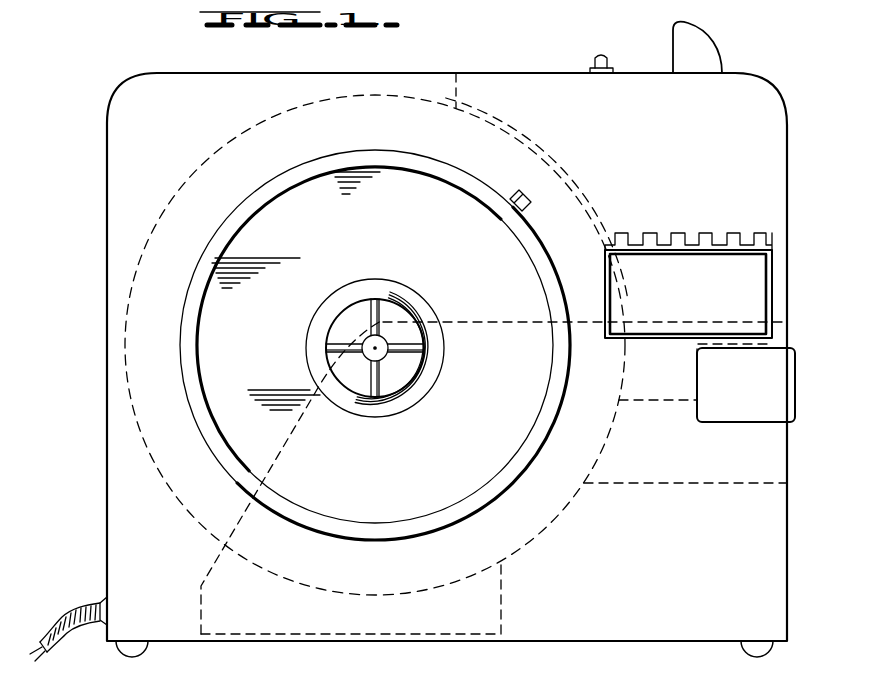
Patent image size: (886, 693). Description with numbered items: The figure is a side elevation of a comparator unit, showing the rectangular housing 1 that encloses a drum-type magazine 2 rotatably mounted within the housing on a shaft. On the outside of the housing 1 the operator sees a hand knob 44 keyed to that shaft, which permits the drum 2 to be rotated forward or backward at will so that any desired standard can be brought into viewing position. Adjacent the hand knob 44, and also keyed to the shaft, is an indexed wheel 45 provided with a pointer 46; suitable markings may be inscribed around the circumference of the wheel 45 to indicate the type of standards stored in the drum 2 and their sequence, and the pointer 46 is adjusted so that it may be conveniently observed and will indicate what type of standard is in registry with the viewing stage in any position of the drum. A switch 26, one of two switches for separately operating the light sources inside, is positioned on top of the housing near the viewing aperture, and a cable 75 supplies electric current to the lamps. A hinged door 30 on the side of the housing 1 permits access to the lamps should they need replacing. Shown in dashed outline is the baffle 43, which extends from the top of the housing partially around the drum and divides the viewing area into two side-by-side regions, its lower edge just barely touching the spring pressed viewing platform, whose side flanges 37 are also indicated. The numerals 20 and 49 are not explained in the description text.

The rectangular housing 1 is at (107, 527).
The drum-type magazine 2 is at (80, 77).
The handle 20 is at (698, 38).
The switch 26 is at (607, 62).
The hinged door 30 is at (715, 296).
The side flanges 37 is at (743, 409).
The baffle 43 is at (535, 96).
The hand knob 44 is at (420, 385).
The indexed wheel 45 is at (499, 491).
The pointer 46 is at (527, 208).
The partition 49 is at (638, 471).
The cable 75 is at (62, 640).